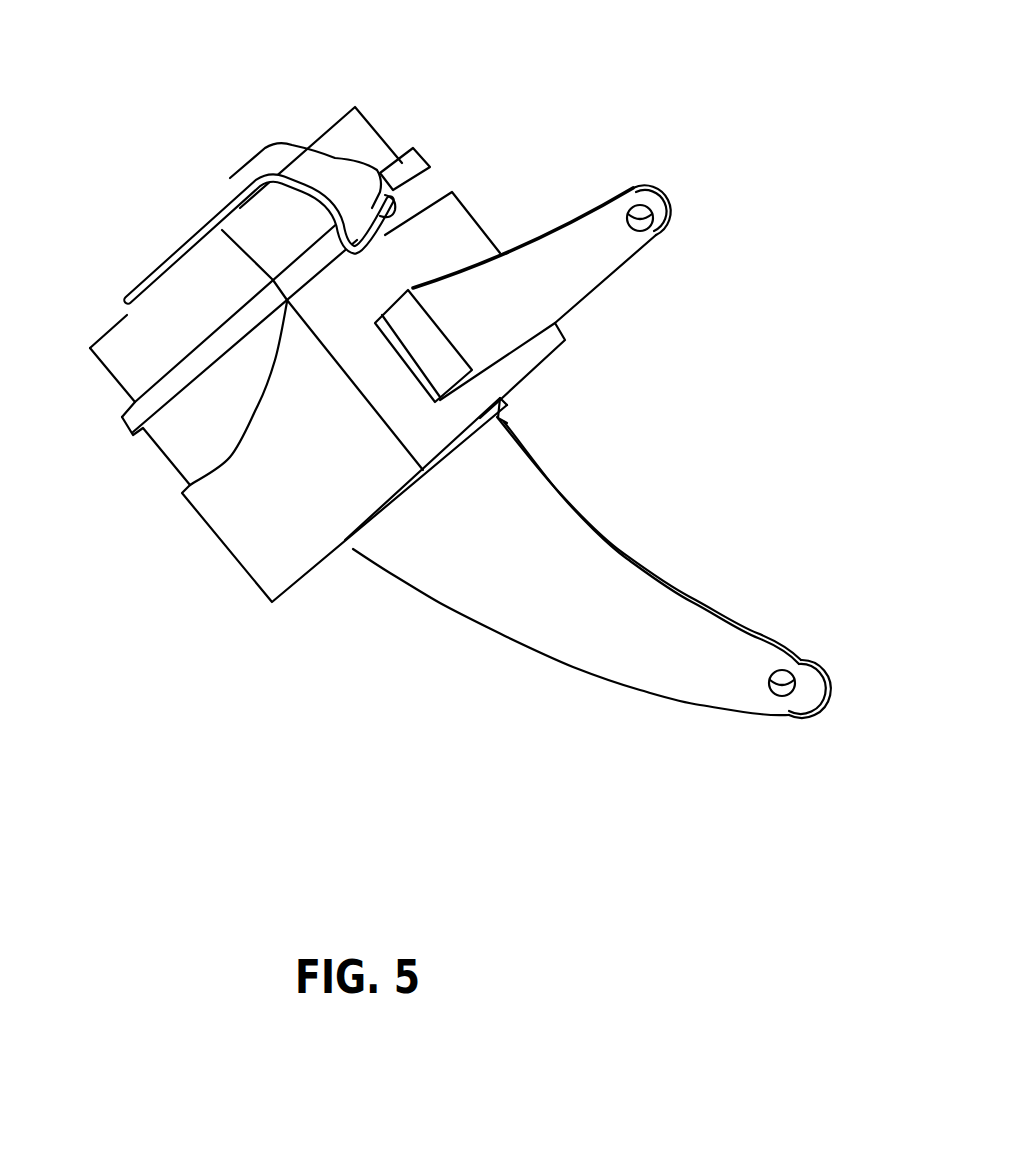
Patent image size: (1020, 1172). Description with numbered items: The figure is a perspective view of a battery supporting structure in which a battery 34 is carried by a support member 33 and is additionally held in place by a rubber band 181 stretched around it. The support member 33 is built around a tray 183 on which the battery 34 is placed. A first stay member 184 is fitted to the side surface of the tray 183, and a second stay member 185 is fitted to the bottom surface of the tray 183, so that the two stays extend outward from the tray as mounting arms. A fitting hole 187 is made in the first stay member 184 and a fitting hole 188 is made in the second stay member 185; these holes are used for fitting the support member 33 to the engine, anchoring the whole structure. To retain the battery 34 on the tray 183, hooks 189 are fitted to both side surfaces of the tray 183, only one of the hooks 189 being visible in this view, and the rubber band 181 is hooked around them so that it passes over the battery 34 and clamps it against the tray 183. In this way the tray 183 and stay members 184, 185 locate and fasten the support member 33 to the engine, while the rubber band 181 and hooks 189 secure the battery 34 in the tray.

The support member 33 is at (510, 640).
The battery 34 is at (173, 435).
The rubber band 181 is at (219, 208).
The tray 183 is at (247, 530).
The first stay member 184 is at (548, 262).
The second stay member 185 is at (600, 560).
The fitting hole 187 is at (644, 207).
The fitting hole 188 is at (790, 670).
The hook 189 is at (368, 212).